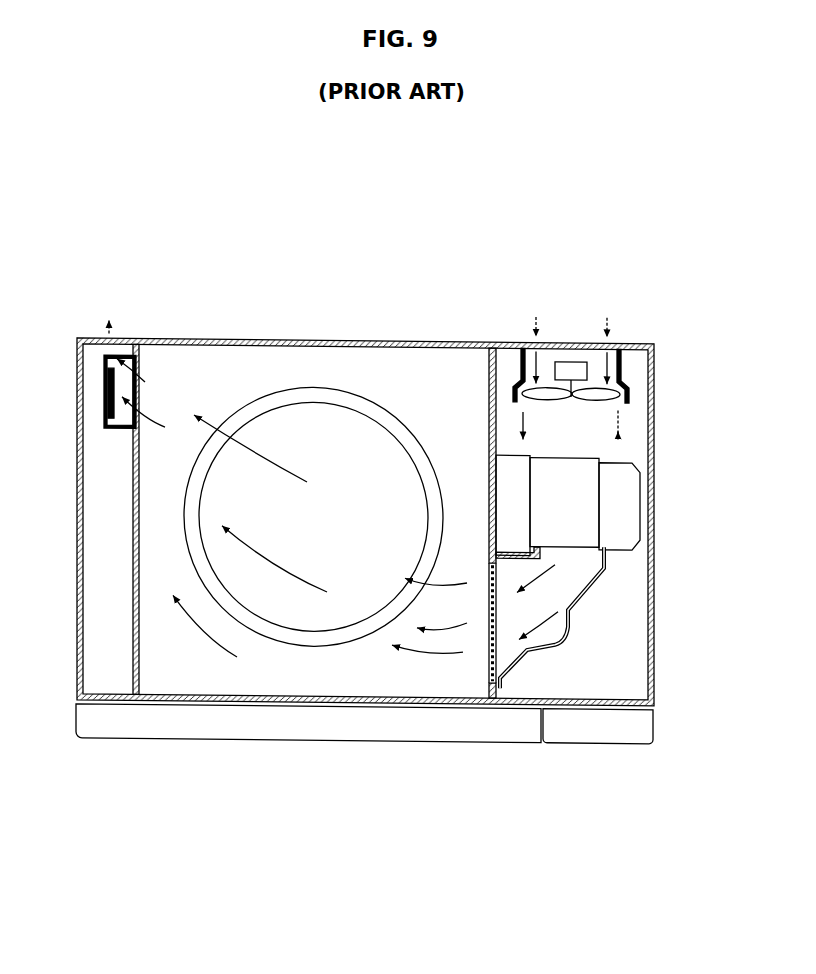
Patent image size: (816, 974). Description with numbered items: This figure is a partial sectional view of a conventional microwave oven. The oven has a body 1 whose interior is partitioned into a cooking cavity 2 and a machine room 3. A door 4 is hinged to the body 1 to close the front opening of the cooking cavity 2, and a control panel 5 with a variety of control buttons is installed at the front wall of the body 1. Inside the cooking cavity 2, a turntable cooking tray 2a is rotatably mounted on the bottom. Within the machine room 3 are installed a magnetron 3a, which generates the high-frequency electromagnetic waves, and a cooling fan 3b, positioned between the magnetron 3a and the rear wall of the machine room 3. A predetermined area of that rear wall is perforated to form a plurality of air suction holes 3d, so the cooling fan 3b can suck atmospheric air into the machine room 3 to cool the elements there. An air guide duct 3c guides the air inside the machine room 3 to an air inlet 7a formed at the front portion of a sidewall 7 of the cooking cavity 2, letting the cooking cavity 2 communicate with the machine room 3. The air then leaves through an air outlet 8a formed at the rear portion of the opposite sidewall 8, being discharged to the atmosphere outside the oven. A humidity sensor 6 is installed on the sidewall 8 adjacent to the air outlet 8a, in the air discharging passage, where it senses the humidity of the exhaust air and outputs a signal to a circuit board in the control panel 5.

The body 1 is at (658, 418).
The cooking cavity 2 is at (350, 676).
The turntable cooking tray 2a is at (280, 630).
The machine room 3 is at (624, 620).
The magnetron 3a is at (620, 504).
The cooling fan 3b is at (597, 392).
The air guide duct 3c is at (565, 634).
The air suction holes 3d is at (580, 339).
The door 4 is at (335, 730).
The control panel 5 is at (600, 729).
The humidity sensor 6 is at (105, 388).
The sidewall 7 is at (490, 677).
The air inlet 7a is at (489, 606).
The opposite sidewall 8 is at (140, 458).
The air outlet 8a is at (140, 394).